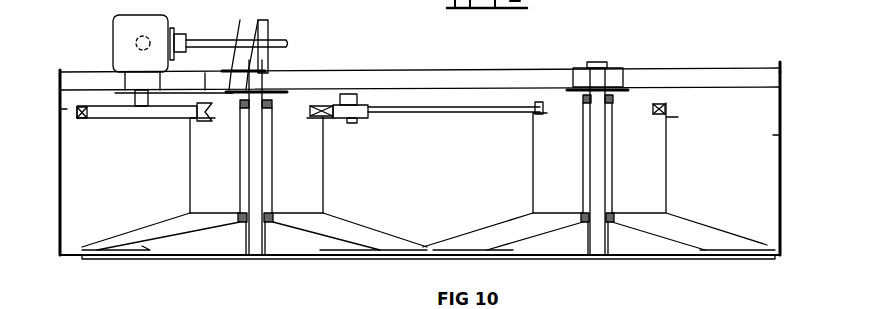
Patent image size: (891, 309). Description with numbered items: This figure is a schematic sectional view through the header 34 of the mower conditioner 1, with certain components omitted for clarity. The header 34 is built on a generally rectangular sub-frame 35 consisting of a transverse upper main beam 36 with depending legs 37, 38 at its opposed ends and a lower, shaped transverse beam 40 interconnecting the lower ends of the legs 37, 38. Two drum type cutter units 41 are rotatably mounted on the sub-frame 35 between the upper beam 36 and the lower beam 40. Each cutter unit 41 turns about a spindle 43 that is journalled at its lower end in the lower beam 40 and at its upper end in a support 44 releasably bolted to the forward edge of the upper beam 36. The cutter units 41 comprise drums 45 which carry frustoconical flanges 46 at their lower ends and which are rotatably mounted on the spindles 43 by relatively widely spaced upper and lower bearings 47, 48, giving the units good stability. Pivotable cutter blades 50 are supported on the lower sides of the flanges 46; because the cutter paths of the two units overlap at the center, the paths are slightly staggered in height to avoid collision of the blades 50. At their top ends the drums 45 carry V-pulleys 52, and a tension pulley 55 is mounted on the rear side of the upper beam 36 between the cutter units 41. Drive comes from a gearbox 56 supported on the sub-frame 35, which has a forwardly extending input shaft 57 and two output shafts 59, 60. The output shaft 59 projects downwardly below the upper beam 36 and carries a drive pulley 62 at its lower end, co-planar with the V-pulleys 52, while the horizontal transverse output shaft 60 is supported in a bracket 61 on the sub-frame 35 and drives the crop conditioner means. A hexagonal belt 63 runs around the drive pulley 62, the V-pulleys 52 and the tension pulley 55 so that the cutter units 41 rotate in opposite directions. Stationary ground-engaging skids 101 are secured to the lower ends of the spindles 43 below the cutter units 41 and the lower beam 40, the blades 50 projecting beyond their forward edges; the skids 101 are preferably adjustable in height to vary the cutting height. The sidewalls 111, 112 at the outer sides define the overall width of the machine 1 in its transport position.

The mower conditioner 1 is at (720, 56).
The header 34 is at (810, 106).
The sub-frame 35 is at (774, 66).
The transverse upper main beam 36 is at (676, 55).
The depending leg 37 is at (60, 157).
The depending leg 38 is at (783, 177).
The lower shaped transverse beam 40 is at (385, 250).
The drum type cutter unit 41 is at (323, 190).
The spindle 43 is at (274, 148).
The support 44 is at (241, 40).
The drum 45 is at (190, 148).
The frustoconical flange 46 is at (375, 235).
The upper bearing 47 is at (270, 90).
The lower bearing 48 is at (276, 236).
The pivotable cutter blade 50 is at (97, 247).
The V-pulley 52 is at (312, 108).
The tension pulley 55 is at (365, 122).
The gearbox 56 is at (125, 18).
The input shaft 57 is at (150, 41).
The output shaft 59 is at (130, 97).
The output shaft 60 is at (270, 33).
The bracket 61 is at (264, 30).
The drive pulley 62 is at (108, 120).
The hexagonal belt 63 is at (428, 107).
The ground-engaging skid 101 is at (165, 259).
The sidewall 111 is at (60, 109).
The sidewall 112 is at (783, 135).